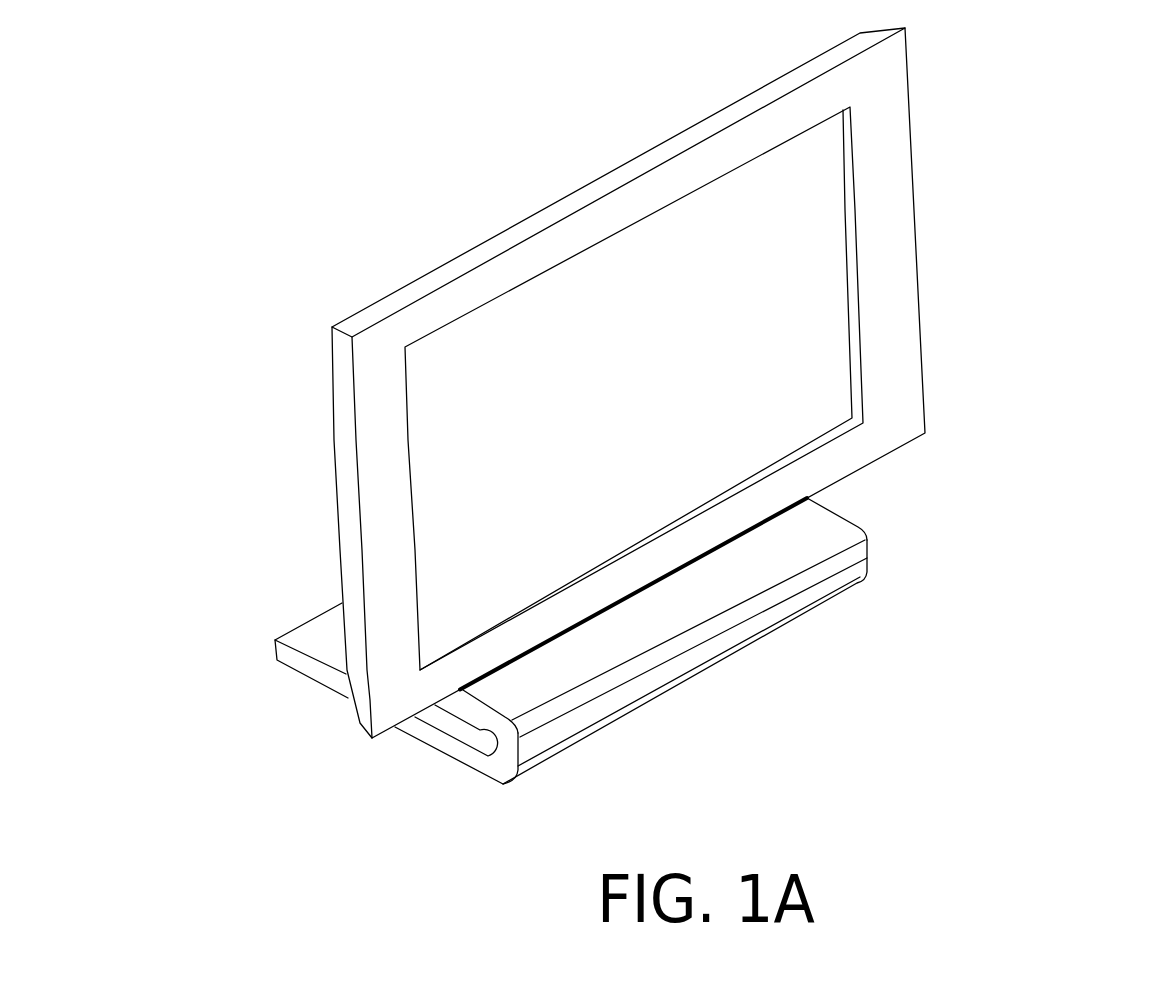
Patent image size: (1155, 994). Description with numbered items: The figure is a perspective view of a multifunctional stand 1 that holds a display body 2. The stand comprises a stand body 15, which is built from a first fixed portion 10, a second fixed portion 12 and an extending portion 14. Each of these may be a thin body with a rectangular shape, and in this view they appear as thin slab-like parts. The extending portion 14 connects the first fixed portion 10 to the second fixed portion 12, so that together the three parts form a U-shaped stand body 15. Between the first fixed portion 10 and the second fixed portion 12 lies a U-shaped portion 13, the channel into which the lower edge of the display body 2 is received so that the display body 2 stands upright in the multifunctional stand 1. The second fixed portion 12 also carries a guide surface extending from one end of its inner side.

The multifunctional stand 1 is at (731, 383).
The display body 2 is at (480, 337).
The first fixed portion 10 is at (318, 652).
The second fixed portion 12 is at (522, 692).
The U-shaped portion 13 is at (470, 744).
The extending portion 14 is at (620, 700).
The stand body 15 is at (621, 659).